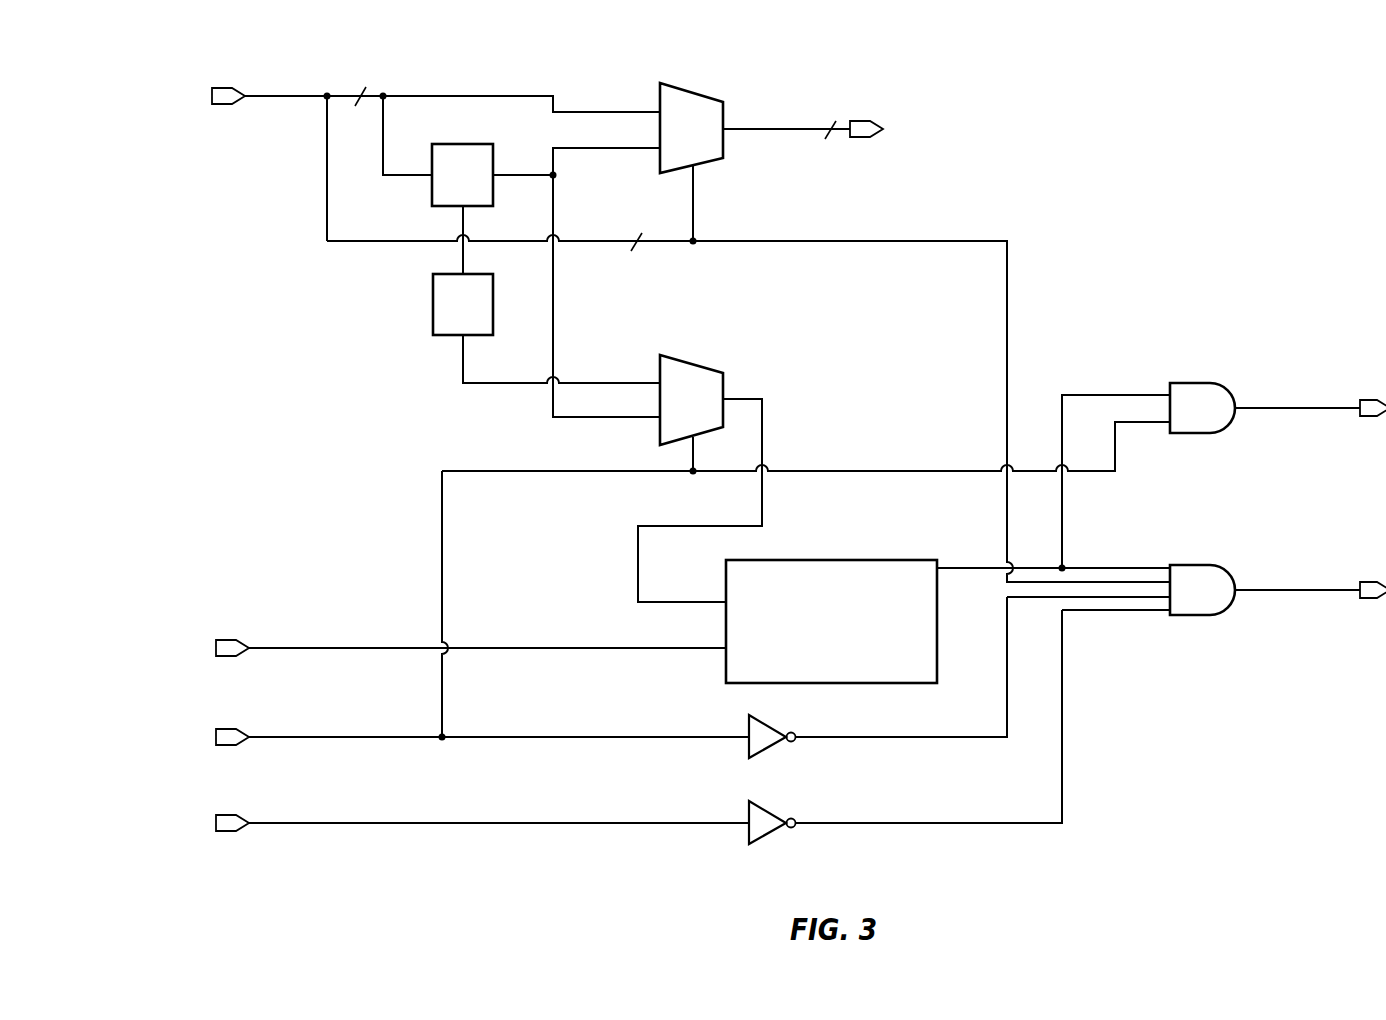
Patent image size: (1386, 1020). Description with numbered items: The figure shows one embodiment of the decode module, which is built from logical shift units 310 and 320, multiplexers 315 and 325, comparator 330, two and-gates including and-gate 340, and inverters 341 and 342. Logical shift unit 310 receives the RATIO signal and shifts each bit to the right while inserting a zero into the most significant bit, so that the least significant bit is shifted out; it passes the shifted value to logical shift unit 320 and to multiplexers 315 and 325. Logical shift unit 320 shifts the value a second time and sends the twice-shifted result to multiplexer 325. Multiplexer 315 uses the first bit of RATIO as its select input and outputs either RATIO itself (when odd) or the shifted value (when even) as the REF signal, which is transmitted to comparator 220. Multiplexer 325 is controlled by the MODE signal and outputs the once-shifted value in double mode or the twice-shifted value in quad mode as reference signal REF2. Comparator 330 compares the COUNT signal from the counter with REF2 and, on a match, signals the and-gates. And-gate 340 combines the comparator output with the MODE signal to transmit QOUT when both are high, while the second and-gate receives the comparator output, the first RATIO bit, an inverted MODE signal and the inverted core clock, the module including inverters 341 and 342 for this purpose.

The comparator 220 is at (1226, 134).
The logical shift unit 310 is at (432, 193).
The multiplexer 315 is at (712, 161).
The logical shift unit 320 is at (432, 317).
The multiplexer 325 is at (700, 363).
The comparator 330 is at (1198, 618).
The and-gate 340 is at (1198, 436).
The inverter 341 is at (775, 746).
The inverter 342 is at (778, 844).